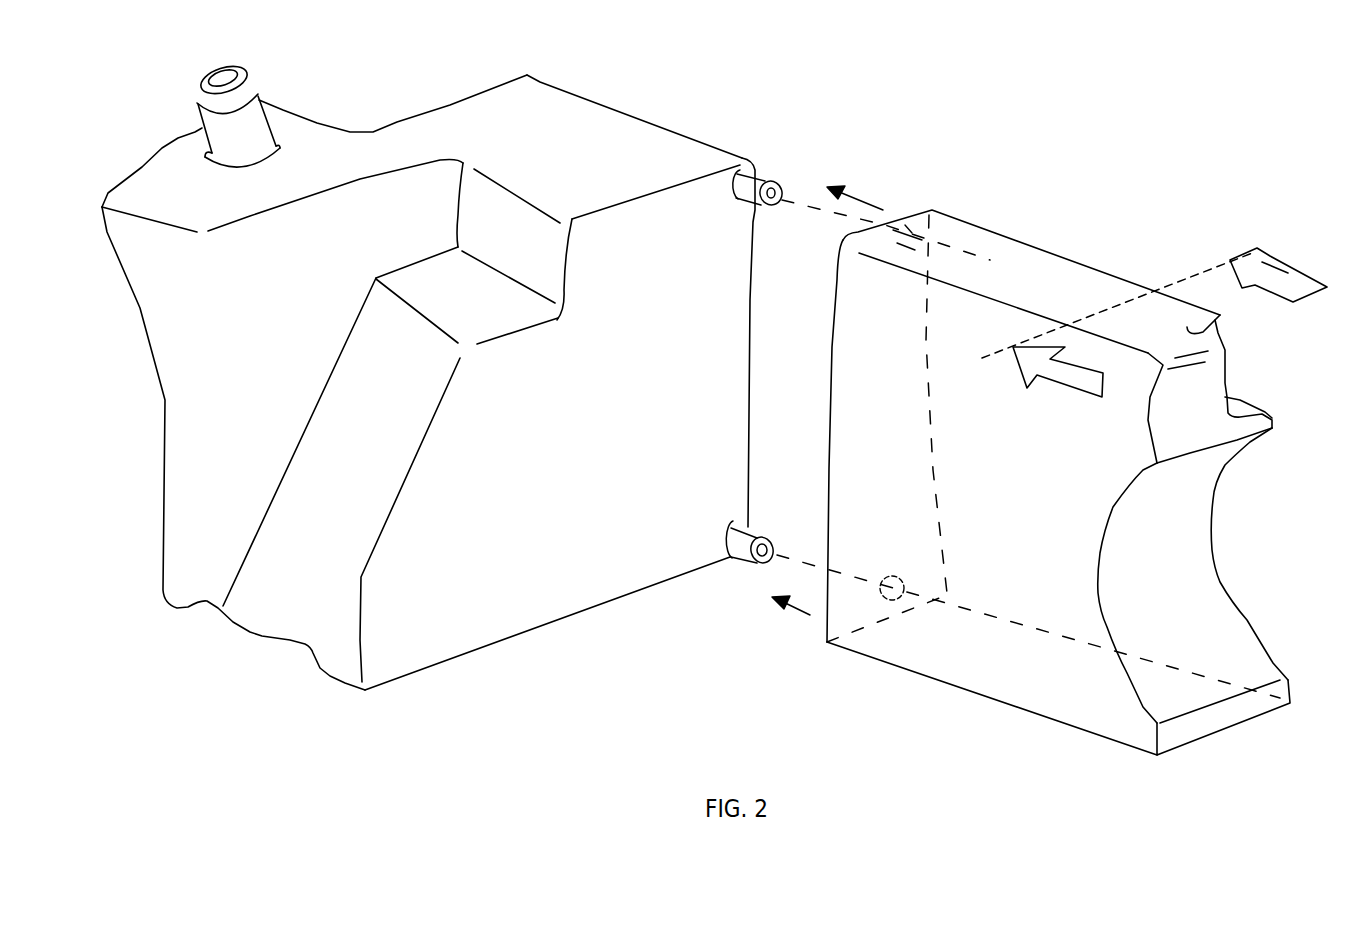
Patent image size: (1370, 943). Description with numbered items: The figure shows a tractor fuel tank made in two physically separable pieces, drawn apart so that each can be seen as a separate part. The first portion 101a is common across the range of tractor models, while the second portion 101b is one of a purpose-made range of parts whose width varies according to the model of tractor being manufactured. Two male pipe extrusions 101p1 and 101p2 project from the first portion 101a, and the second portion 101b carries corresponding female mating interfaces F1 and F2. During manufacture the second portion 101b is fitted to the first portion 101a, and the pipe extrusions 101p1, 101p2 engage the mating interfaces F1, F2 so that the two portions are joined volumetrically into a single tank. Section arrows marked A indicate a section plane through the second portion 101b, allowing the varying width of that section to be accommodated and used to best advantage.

The first portion 101a is at (632, 135).
The male pipe extrusion 101p1 is at (757, 177).
The male pipe extrusion 101p2 is at (743, 545).
The second portion 101b is at (1092, 290).
The female mating interface F1 is at (933, 212).
The female mating interface F2 is at (890, 607).
The section line A- A is at (1023, 427).